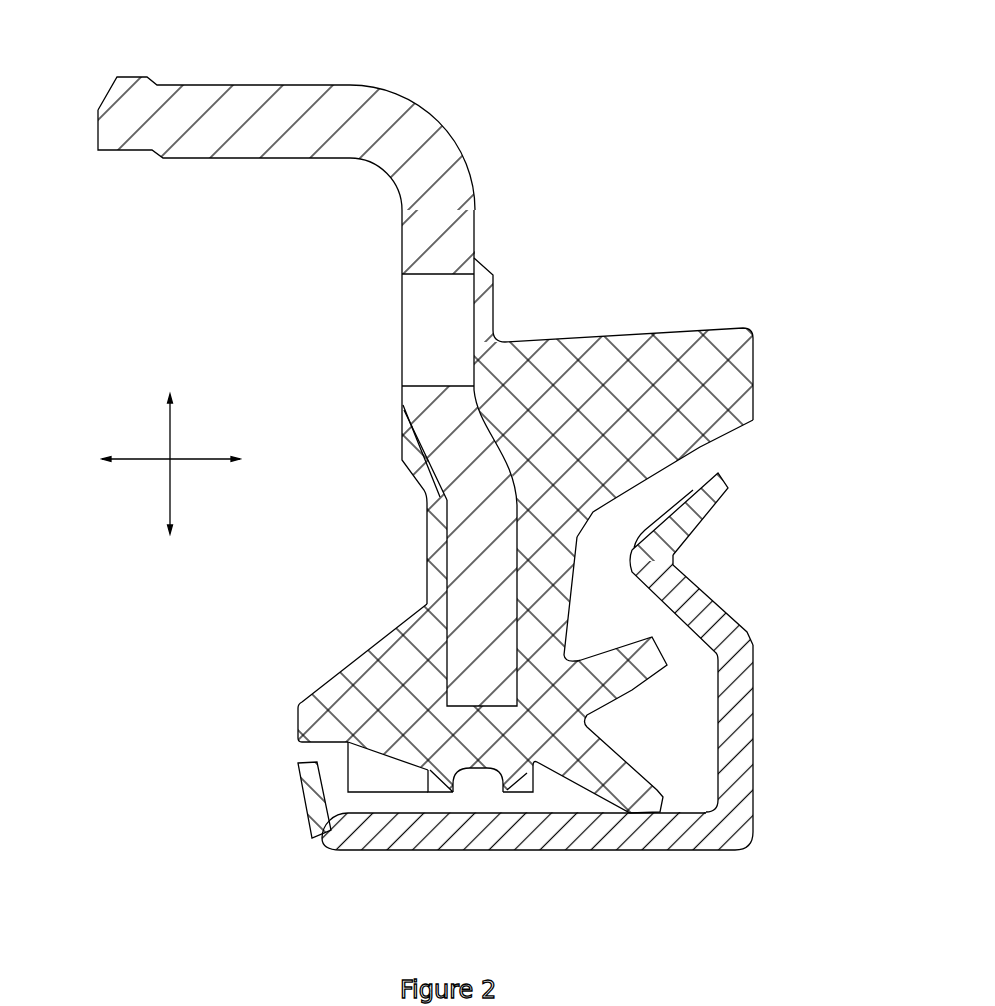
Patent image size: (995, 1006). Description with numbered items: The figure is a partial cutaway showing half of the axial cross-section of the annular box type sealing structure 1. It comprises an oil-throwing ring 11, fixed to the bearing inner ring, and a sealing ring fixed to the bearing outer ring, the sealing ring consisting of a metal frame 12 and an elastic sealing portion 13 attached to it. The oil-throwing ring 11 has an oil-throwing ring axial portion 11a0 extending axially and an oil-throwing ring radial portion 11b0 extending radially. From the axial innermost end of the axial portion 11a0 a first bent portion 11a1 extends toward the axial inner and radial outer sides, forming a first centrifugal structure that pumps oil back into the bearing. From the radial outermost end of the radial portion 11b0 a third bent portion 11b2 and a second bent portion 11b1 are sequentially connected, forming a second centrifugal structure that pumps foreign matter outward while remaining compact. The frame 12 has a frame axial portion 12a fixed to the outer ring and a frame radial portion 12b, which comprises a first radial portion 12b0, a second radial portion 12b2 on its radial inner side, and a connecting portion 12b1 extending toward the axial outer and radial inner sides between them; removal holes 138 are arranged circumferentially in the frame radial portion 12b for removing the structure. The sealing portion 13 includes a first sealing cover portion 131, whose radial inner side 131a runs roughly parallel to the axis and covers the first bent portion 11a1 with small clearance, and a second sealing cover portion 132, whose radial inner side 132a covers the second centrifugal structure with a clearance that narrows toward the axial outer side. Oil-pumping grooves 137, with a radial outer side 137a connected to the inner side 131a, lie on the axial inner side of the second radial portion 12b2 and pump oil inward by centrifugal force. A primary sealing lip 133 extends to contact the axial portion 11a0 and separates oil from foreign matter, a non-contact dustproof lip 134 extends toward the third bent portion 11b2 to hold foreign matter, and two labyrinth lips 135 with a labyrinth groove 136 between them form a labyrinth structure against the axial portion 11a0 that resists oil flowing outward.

The box type sealing structure 1 is at (62, 34).
The oil-throwing ring 11 is at (740, 840).
The oil-throwing ring axial portion 11a0 is at (417, 838).
The first bent portion 11a1 is at (312, 802).
The oil-throwing ring radial portion 11b0 is at (743, 737).
The second bent portion 11b1 is at (732, 498).
The third bent portion 11b2 is at (705, 600).
The frame 12 is at (432, 120).
The frame axial portion 12a is at (297, 95).
The frame radial portion 12b is at (402, 255).
The first radial portion 12b0 is at (463, 240).
The connecting portion 12b1 is at (470, 443).
The second radial portion 12b2 is at (467, 620).
The sealing portion 13 is at (403, 450).
The first sealing cover portion 131 is at (307, 705).
The radial inner side of the first sealing cover portion 131a is at (308, 740).
The second sealing cover portion 132 is at (730, 335).
The radial inner side of the second sealing cover portion 132a is at (722, 435).
The primary sealing lip 133 is at (628, 797).
The dustproof lip 134 is at (655, 665).
The labyrinth lips 135 is at (438, 777).
The labyrinth groove 136 is at (485, 790).
The oil-pumping grooves 137 is at (372, 777).
The radial outer side of the oil-pumping groove 137a is at (378, 750).
The removal holes 138 is at (465, 330).